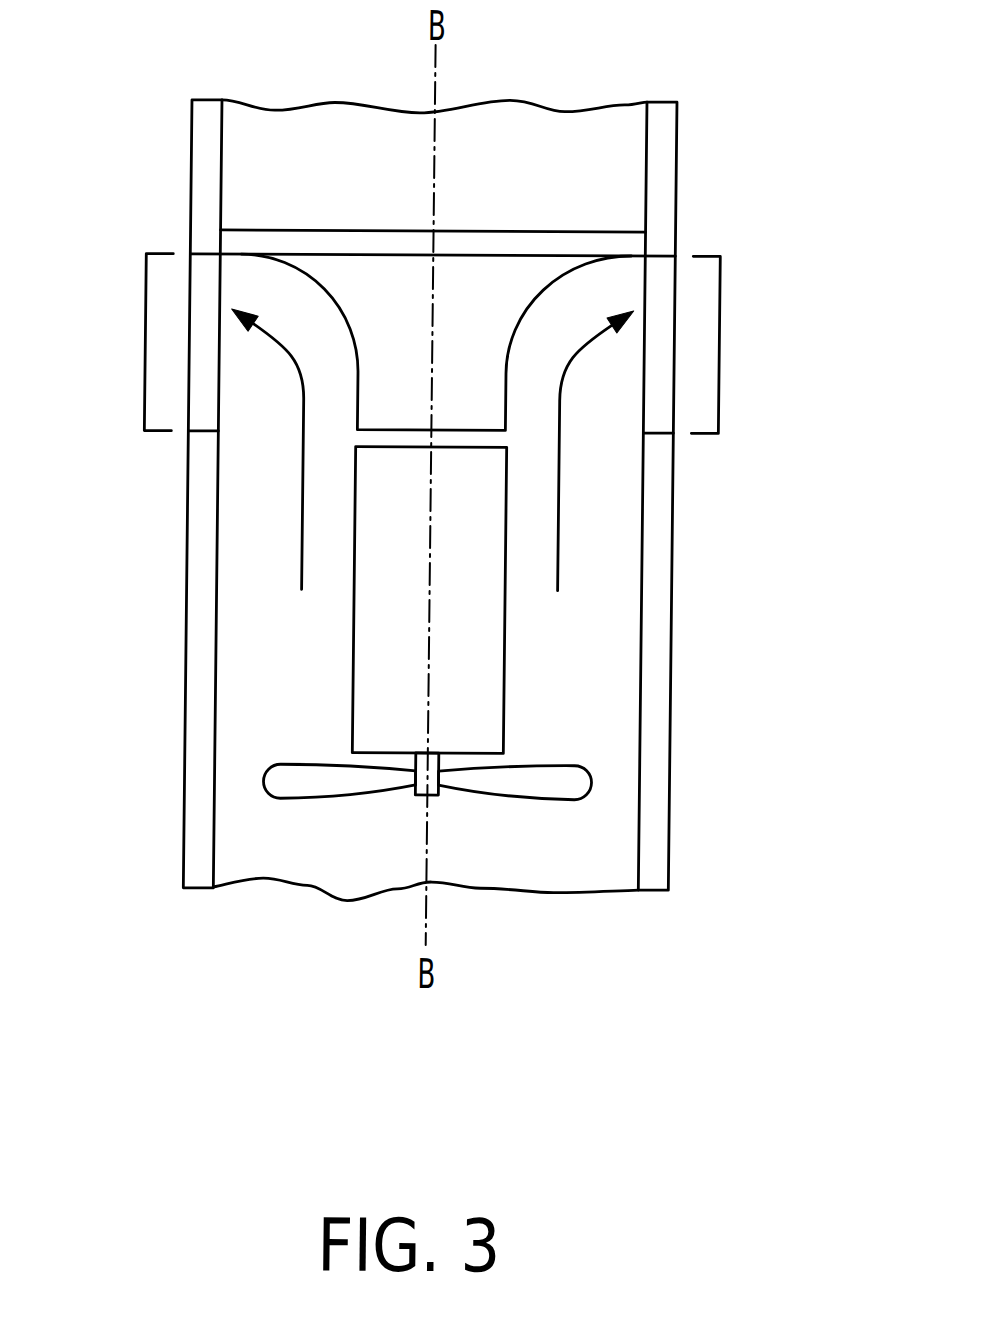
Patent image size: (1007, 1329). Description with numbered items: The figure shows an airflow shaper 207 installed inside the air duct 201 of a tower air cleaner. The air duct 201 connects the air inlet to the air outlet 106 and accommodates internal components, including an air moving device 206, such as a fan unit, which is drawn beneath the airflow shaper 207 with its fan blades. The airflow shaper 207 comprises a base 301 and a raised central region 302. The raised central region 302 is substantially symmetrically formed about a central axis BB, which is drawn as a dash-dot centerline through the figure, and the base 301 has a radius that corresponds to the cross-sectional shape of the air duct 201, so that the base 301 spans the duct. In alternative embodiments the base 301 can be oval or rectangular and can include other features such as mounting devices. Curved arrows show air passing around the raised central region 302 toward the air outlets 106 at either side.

The air outlet 106 is at (148, 344).
The air duct 201 is at (303, 677).
The air moving device 206 is at (509, 683).
The airflow shaper 207 is at (515, 203).
The base 301 is at (634, 242).
The raised central region 302 is at (415, 320).